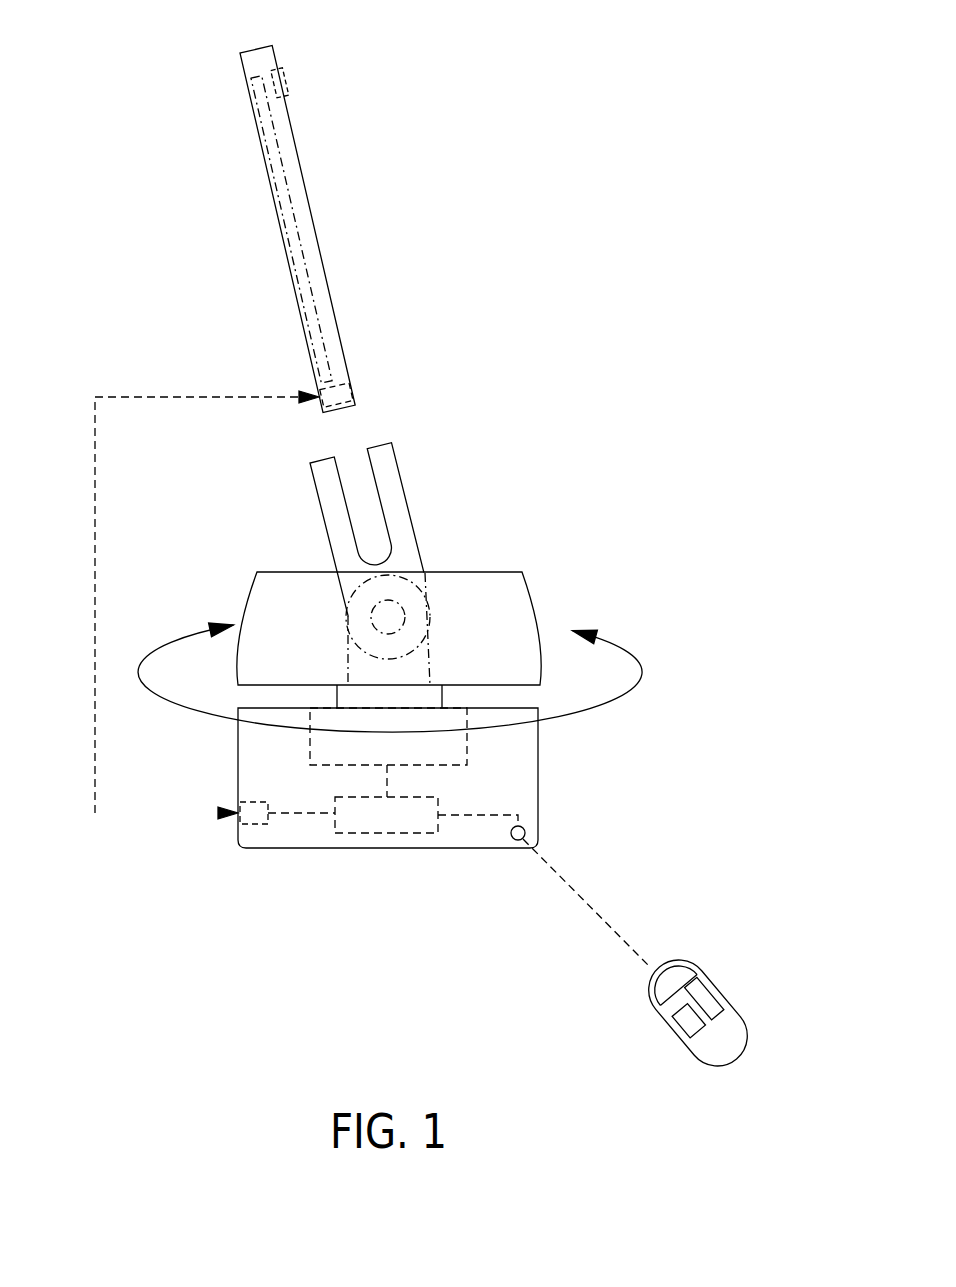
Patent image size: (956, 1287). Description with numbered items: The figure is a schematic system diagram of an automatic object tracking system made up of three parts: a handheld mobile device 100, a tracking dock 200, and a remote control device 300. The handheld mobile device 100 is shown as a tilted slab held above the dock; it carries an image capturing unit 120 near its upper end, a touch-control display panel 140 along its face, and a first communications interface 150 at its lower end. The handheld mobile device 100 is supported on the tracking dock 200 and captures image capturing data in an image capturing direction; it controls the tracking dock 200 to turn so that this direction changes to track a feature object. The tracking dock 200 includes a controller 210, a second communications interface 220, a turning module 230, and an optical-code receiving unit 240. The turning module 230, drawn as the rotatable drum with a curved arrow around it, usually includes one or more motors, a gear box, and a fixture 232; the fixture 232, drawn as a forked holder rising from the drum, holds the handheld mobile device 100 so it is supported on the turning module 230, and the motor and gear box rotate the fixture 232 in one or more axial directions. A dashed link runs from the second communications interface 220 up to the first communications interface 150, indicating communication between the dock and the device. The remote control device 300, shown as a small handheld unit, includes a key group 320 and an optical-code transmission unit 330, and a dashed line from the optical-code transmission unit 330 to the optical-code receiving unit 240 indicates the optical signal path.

The handheld mobile device 100 is at (352, 144).
The image capturing unit 120 is at (286, 83).
The touch-control display panel 140 is at (268, 172).
The first communications interface 150 is at (352, 390).
The tracking dock 200 is at (218, 578).
The controller 210 is at (360, 833).
The second communications interface 220 is at (248, 818).
The turning module 230 is at (455, 752).
The fixture 232 is at (393, 508).
The optical-code receiving unit 240 is at (524, 829).
The remote control device 300 is at (712, 948).
The key group 320 is at (683, 1020).
The optical-code transmission unit 330 is at (652, 967).